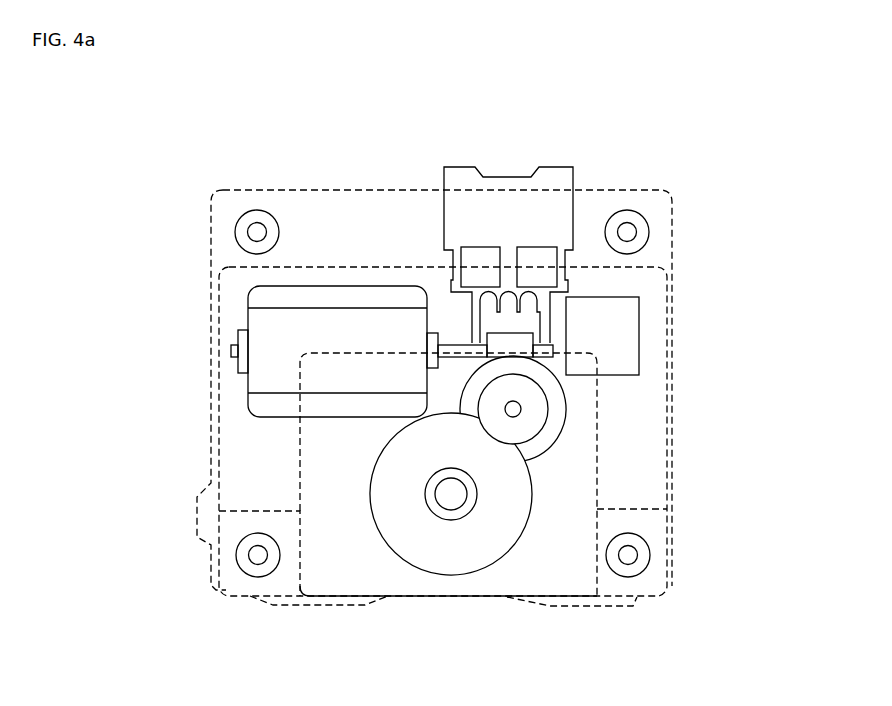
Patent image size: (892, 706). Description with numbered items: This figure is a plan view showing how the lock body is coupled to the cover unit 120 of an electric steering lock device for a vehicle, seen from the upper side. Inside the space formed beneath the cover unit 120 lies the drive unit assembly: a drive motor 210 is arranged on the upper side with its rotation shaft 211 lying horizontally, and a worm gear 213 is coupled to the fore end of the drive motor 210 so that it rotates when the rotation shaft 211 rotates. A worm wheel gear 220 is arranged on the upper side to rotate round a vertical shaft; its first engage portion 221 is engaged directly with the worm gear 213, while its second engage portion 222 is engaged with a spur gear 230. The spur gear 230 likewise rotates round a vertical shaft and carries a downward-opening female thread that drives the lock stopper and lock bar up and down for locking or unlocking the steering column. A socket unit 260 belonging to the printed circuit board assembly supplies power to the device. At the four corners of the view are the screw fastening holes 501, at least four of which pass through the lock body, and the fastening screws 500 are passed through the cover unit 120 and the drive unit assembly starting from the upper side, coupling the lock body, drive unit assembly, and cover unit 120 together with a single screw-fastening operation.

The cover unit 120 is at (632, 414).
The drive motor 210 is at (340, 323).
The rotation shaft 211 is at (450, 345).
The worm gear 213 is at (512, 341).
The worm wheel gear 220 is at (650, 451).
The first engage portion 221 is at (553, 445).
The second engage portion 222 is at (549, 408).
The spur gear 230 is at (493, 525).
The socket unit 260 is at (527, 213).
The fastening screws 500 is at (255, 232).
The screw fastening holes 501 is at (211, 200).